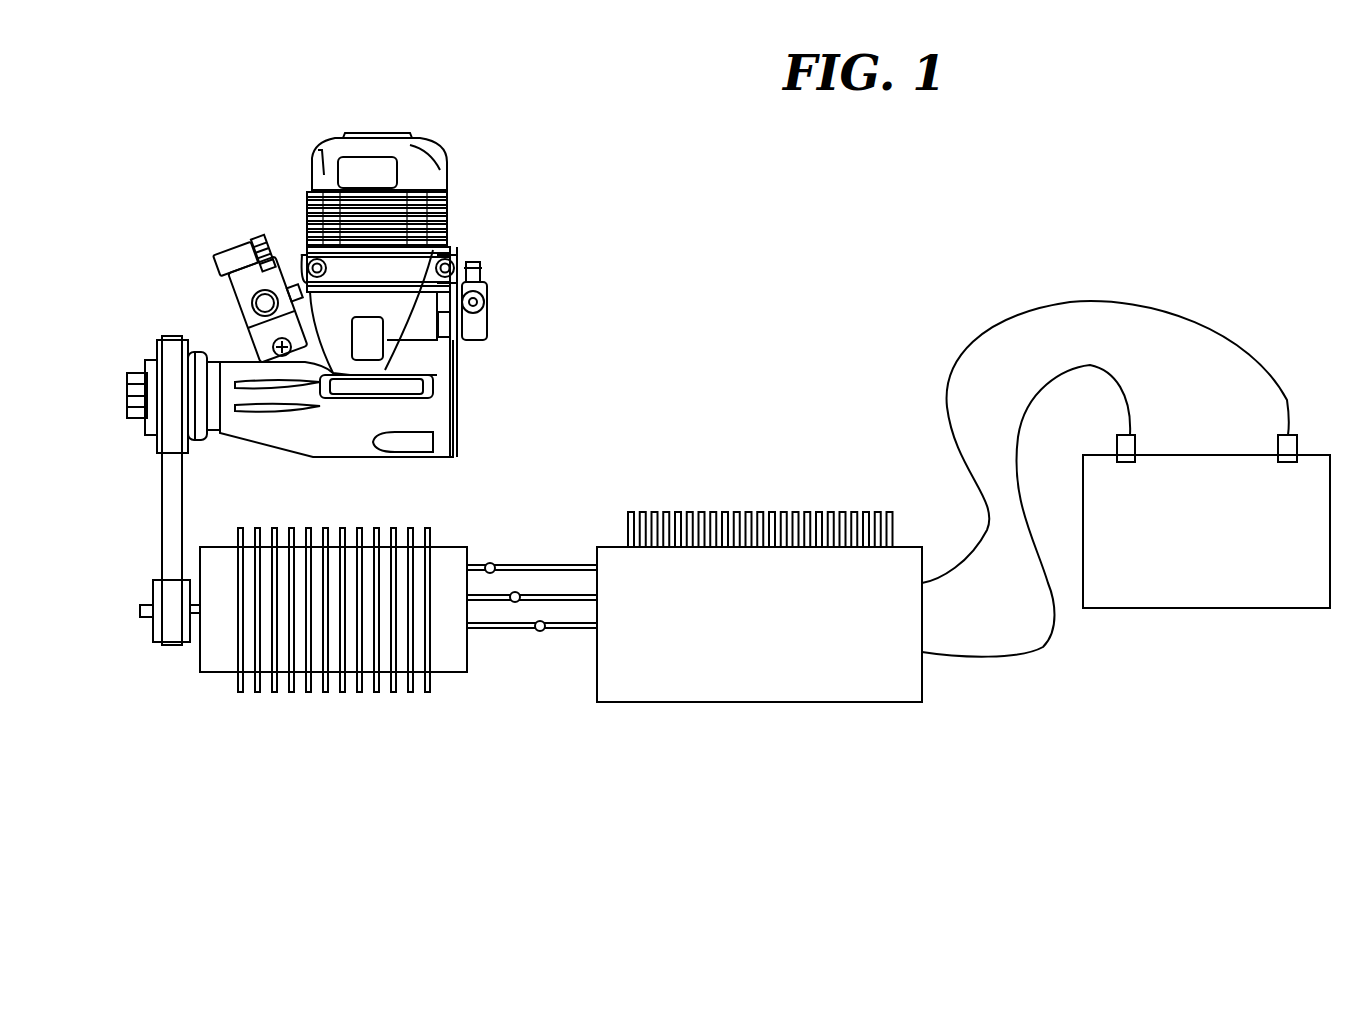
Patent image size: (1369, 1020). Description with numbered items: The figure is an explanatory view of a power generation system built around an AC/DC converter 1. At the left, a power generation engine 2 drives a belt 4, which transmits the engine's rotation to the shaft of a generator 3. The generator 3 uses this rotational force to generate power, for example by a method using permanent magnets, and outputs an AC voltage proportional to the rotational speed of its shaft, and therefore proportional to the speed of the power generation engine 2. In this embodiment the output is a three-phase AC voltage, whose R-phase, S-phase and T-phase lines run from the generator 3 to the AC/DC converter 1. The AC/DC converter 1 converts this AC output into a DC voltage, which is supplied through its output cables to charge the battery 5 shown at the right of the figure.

The AC/DC converter 1 is at (767, 702).
The power generation engine 2 is at (442, 225).
The generator 3 is at (207, 672).
The belt 4 is at (162, 488).
The battery 5 is at (1213, 615).